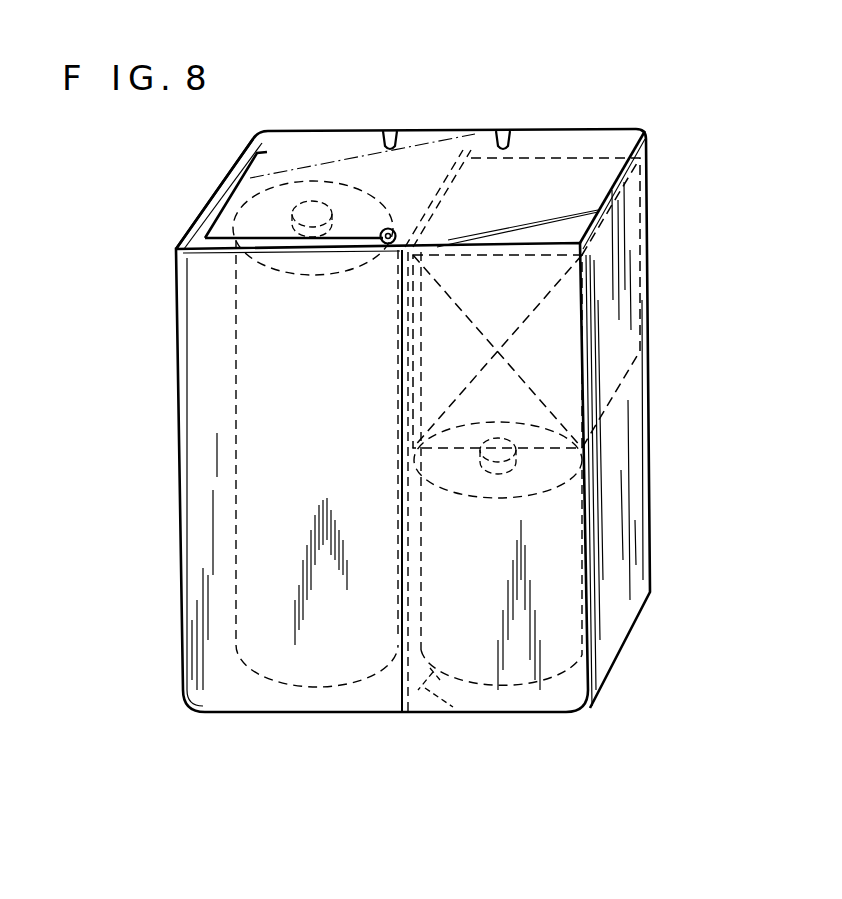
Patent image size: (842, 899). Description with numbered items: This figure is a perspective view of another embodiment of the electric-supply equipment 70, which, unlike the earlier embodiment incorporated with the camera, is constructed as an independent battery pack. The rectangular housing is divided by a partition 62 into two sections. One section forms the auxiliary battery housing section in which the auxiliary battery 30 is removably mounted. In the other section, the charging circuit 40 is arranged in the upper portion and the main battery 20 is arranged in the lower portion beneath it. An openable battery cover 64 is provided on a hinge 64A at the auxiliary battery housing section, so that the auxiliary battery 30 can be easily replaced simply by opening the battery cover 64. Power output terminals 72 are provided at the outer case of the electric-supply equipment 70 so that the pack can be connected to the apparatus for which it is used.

The electric-supply equipment 70 is at (611, 109).
The auxiliary battery 30 is at (236, 512).
The charging circuit 40 is at (545, 335).
The main battery 20 is at (535, 688).
The partition 62 is at (440, 695).
The battery cover 64 is at (224, 201).
The hinge 64A is at (386, 229).
The power output terminals 72 is at (391, 130).